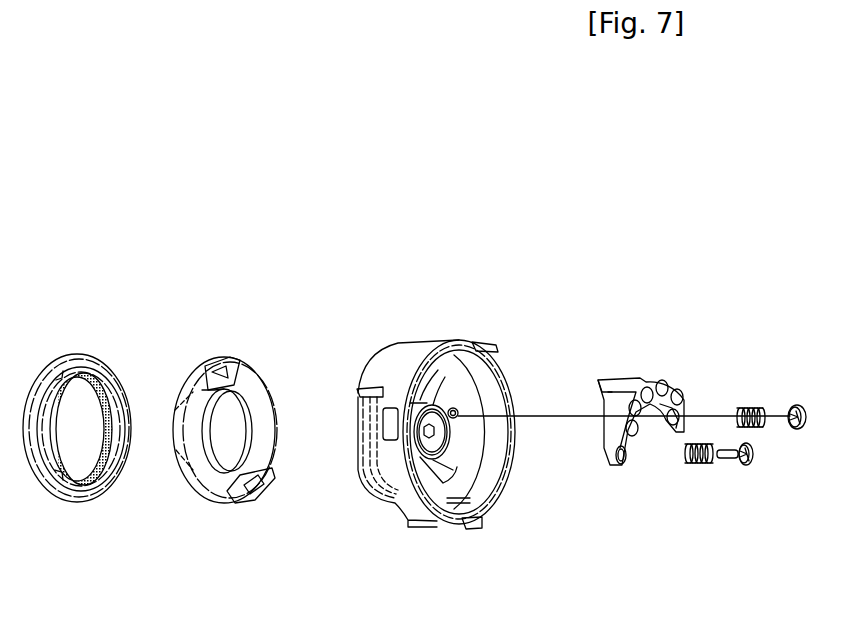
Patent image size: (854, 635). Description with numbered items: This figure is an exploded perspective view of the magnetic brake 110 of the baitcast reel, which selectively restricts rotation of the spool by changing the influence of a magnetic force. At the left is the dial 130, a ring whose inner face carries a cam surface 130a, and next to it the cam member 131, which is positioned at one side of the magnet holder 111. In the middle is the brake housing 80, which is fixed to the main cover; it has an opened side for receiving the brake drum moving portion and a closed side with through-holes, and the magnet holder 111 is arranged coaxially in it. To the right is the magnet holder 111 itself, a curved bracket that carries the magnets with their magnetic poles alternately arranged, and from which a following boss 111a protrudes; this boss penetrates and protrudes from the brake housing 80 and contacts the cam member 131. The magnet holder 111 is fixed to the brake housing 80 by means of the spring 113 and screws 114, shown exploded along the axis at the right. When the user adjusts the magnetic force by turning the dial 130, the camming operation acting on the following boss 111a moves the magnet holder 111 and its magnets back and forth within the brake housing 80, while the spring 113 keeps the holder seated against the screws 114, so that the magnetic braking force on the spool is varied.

The brake housing 80 is at (363, 467).
The magnetic brake 110 is at (678, 425).
The magnet holder 111 is at (617, 467).
The following boss 111a is at (609, 378).
The spring 113 is at (698, 465).
The screws 114 is at (746, 467).
The dial 130 is at (81, 502).
The cam surface 130a is at (103, 388).
The cam member 131 is at (225, 457).